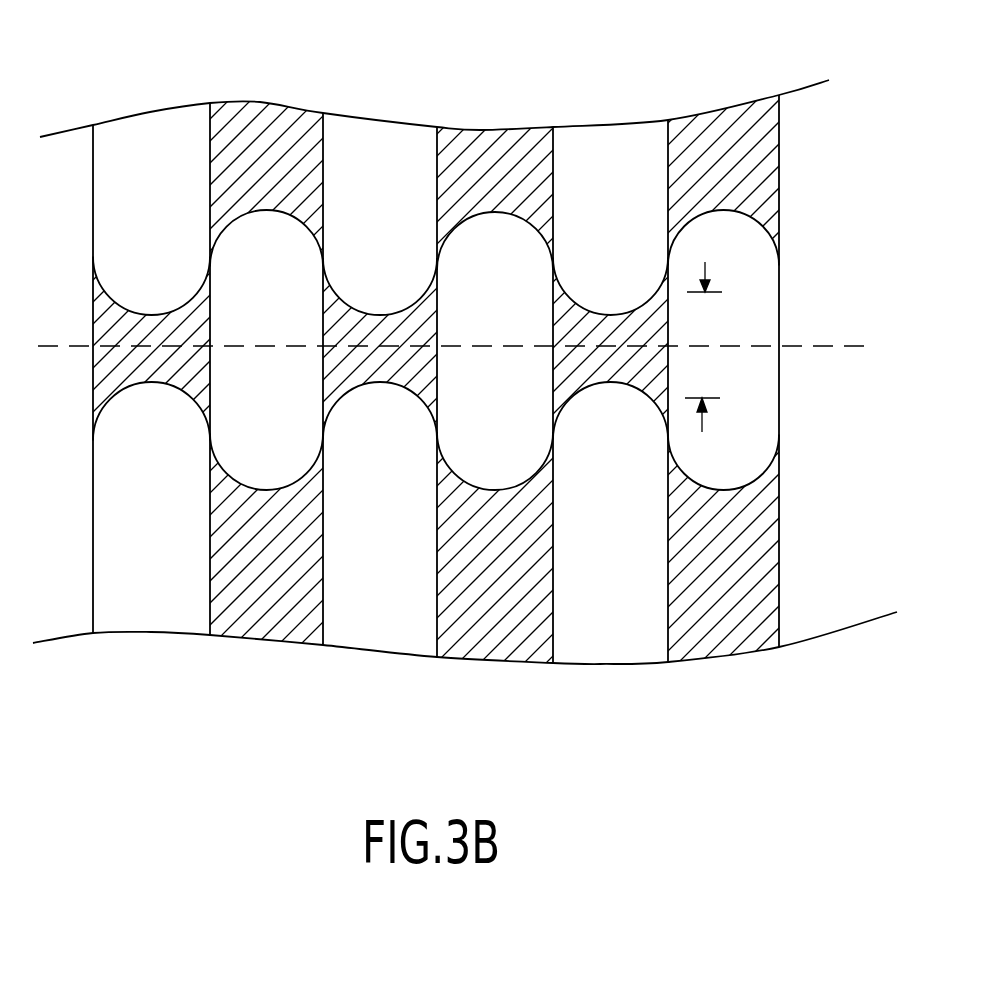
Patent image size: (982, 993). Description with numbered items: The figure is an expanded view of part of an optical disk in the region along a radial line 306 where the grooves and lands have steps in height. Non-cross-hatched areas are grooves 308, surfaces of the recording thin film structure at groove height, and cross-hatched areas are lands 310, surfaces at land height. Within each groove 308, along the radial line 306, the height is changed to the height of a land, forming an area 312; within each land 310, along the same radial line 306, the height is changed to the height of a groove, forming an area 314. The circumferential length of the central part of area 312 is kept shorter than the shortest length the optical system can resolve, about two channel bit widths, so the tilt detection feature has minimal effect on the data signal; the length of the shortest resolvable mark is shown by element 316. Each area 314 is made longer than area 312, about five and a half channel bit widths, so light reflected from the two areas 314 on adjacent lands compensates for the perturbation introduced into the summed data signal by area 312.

The radial line 306 is at (828, 347).
The groove 308 is at (153, 620).
The land 310 is at (285, 628).
The area of land height within a groove 312 is at (130, 320).
The area of groove height within a land 314 is at (267, 242).
The length of the shortest resolvable mark 316 is at (705, 262).